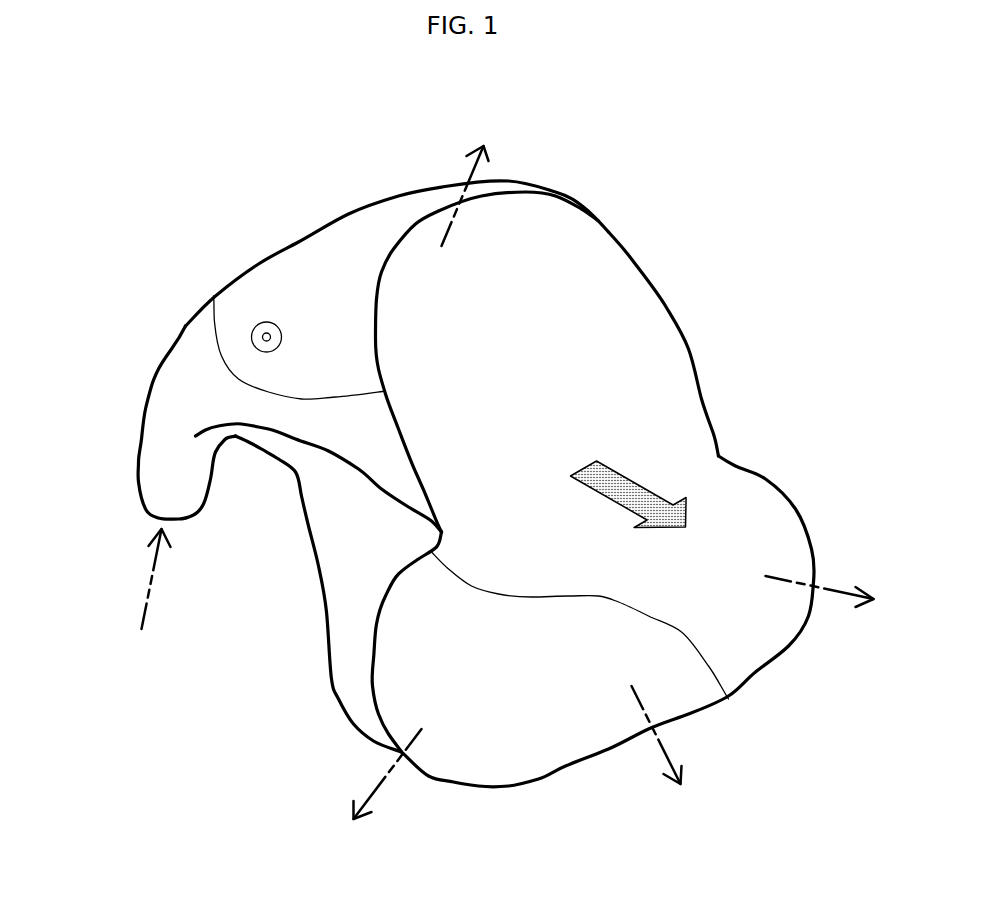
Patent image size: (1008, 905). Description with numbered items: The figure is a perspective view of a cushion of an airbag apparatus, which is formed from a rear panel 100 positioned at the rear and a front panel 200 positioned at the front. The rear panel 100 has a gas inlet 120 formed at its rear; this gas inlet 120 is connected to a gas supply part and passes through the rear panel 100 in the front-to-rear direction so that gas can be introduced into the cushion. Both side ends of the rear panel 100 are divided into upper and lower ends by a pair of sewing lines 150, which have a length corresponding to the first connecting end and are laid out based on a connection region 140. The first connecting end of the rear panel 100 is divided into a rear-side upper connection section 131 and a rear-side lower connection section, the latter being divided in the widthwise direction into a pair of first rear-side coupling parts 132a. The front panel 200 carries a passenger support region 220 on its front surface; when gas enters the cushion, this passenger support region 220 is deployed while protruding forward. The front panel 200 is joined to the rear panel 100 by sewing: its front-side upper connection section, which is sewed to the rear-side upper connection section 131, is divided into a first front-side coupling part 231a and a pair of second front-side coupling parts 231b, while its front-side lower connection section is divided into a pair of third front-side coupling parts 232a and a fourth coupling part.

The rear panel 100 is at (310, 254).
The gas inlet 120 is at (163, 510).
The rear-side upper connection section 131 is at (490, 205).
The first rear-side coupling parts 132a is at (730, 700).
The connection region 140 is at (177, 363).
The sewing lines 150 is at (340, 457).
The front panel 200 is at (660, 444).
The passenger support region 220 is at (600, 383).
The first front-side coupling part 231a is at (440, 220).
The second front-side coupling parts 231b is at (215, 297).
The third front-side coupling parts 232a is at (370, 670).